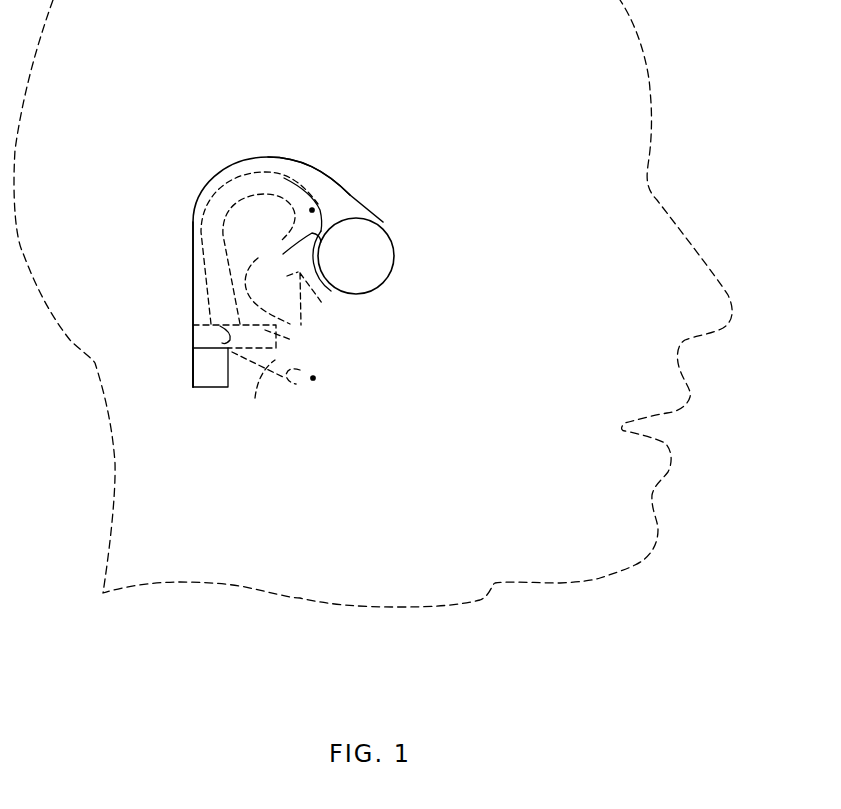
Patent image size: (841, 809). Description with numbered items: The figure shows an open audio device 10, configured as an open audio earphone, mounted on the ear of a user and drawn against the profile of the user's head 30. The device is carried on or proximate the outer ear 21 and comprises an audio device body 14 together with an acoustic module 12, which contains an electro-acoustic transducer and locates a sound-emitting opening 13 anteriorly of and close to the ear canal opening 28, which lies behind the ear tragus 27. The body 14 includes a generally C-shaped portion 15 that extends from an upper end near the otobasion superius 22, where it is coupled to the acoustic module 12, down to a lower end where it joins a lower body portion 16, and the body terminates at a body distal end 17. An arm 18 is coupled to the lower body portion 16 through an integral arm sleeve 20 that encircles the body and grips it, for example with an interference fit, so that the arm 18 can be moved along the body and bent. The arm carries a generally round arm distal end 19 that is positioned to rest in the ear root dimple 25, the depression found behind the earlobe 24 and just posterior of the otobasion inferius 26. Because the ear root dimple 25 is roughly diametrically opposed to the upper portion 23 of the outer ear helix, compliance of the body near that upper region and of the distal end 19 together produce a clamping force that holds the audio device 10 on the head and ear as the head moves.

The open audio device 10 is at (292, 243).
The acoustic module 12 is at (380, 248).
The sound-emitting opening 13 is at (250, 252).
The audio device body 14 is at (251, 233).
The C-shaped portion 15 is at (290, 157).
The lower body portion 16 is at (193, 298).
The body distal end 17 is at (212, 375).
The arm 18 is at (192, 360).
The arm distal end 19 is at (282, 322).
The arm sleeve 20 is at (196, 343).
The outer ear 21 is at (268, 234).
The otobasion superius 22 is at (312, 210).
The upper portion of outer ear helix 23 is at (233, 193).
The earlobe 24 is at (287, 382).
The ear root dimple 25 is at (254, 398).
The otobasion inferius 26 is at (313, 378).
The ear tragus 27 is at (325, 303).
The ear canal opening 28 is at (287, 276).
The head 30 is at (125, 54).